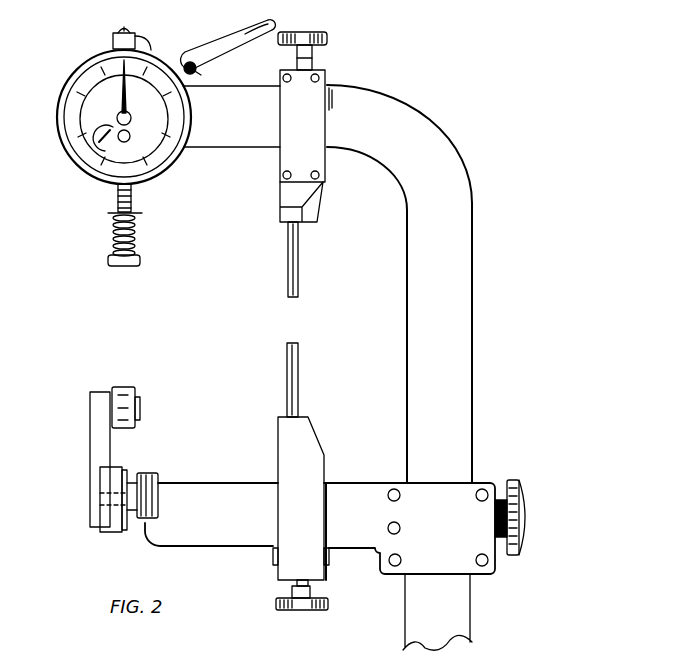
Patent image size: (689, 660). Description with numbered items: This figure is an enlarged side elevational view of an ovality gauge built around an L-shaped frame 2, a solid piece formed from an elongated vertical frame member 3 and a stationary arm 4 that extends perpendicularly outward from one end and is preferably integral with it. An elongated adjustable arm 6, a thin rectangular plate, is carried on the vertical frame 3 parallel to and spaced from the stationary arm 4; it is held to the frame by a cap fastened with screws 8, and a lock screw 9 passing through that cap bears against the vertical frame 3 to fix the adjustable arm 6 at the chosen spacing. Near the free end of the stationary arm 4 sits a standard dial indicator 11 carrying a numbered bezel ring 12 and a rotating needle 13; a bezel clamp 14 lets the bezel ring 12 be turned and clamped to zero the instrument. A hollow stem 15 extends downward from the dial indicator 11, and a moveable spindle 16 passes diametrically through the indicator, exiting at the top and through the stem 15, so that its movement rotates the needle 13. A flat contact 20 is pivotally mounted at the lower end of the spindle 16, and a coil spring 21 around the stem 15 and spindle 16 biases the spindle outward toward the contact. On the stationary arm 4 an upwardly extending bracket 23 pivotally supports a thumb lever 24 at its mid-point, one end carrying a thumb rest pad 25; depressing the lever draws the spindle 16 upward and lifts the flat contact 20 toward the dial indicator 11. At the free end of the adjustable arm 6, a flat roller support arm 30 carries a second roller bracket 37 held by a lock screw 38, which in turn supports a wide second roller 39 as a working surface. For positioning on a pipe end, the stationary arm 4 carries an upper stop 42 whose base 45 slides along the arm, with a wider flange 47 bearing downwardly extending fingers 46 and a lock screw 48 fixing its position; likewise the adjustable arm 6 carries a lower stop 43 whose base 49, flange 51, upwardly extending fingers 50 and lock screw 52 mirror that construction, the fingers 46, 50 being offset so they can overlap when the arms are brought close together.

The L-shaped frame 2 is at (418, 108).
The vertical frame member 3 is at (407, 285).
The stationary arm 4 is at (215, 149).
The adjustable arm 6 is at (227, 482).
The screws 8 is at (392, 486).
The lock screw 9 is at (516, 478).
The dial indicator 11 is at (84, 62).
The bezel ring 12 is at (72, 113).
The needle 13 is at (120, 92).
The bezel clamp 14 is at (198, 72).
The stem 15 is at (114, 196).
The moveable spindle 16 is at (120, 28).
The flat contact 20 is at (142, 261).
The coil spring 21 is at (137, 229).
The bracket 23 is at (188, 58).
The thumb lever 24 is at (210, 48).
The thumb rest pad 25 is at (262, 24).
The roller support arm 30 is at (116, 468).
The second roller bracket 37 is at (90, 433).
The lock screw 38 is at (163, 502).
The second roller 39 is at (136, 388).
The upper stop 42 is at (328, 72).
The lower stop 43 is at (272, 560).
The base 45 is at (286, 121).
The fingers 46 is at (300, 250).
The flange 47 is at (330, 198).
The lock screw 48 is at (318, 30).
The base 49 is at (318, 510).
The fingers 50 is at (299, 360).
The flange 51 is at (320, 438).
The lock screw 52 is at (330, 606).